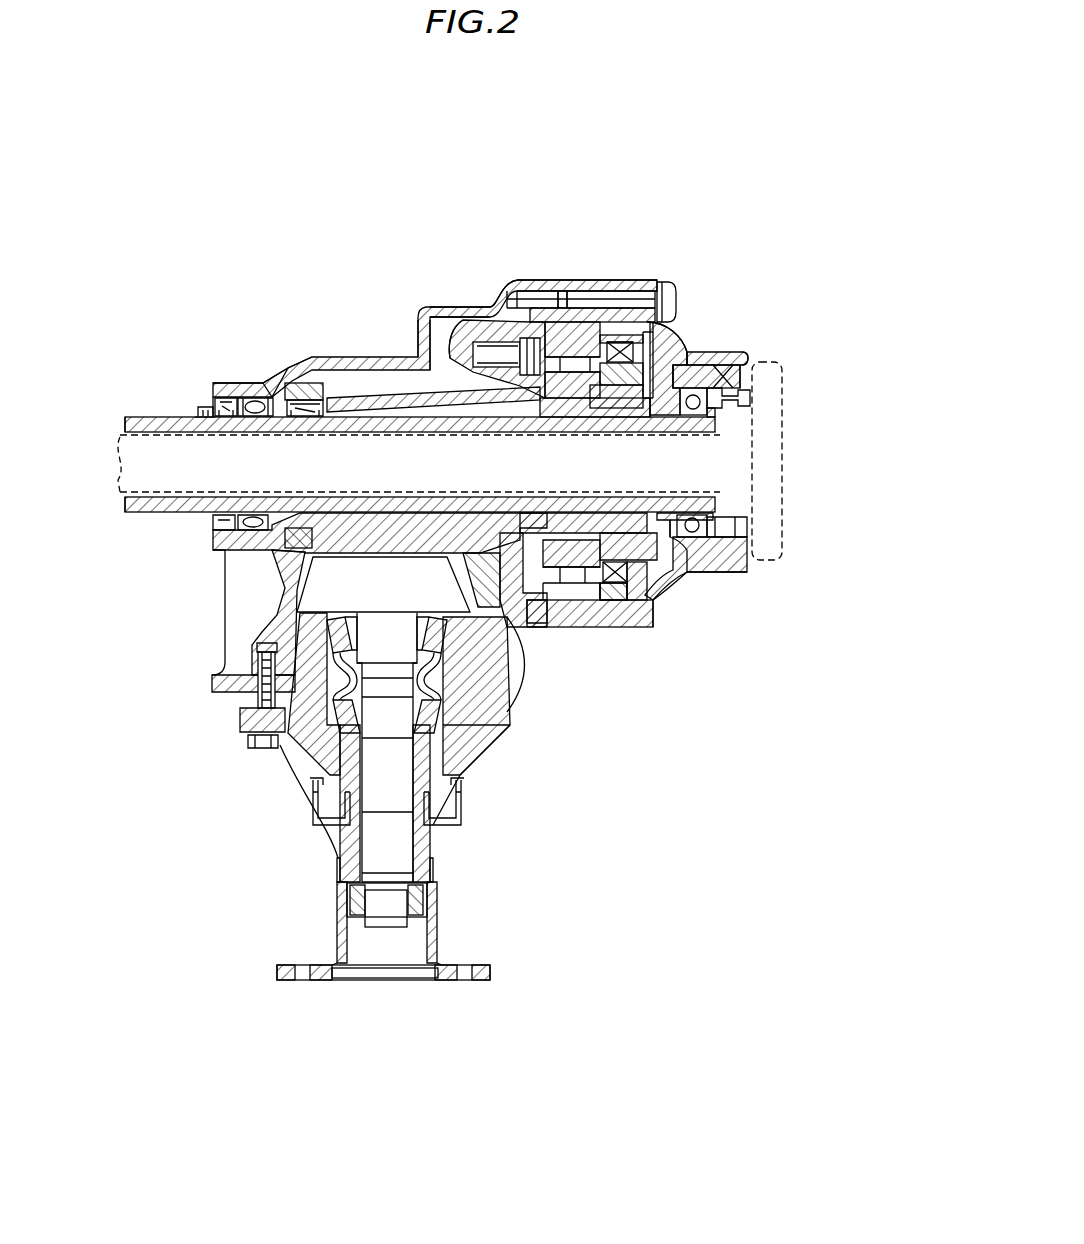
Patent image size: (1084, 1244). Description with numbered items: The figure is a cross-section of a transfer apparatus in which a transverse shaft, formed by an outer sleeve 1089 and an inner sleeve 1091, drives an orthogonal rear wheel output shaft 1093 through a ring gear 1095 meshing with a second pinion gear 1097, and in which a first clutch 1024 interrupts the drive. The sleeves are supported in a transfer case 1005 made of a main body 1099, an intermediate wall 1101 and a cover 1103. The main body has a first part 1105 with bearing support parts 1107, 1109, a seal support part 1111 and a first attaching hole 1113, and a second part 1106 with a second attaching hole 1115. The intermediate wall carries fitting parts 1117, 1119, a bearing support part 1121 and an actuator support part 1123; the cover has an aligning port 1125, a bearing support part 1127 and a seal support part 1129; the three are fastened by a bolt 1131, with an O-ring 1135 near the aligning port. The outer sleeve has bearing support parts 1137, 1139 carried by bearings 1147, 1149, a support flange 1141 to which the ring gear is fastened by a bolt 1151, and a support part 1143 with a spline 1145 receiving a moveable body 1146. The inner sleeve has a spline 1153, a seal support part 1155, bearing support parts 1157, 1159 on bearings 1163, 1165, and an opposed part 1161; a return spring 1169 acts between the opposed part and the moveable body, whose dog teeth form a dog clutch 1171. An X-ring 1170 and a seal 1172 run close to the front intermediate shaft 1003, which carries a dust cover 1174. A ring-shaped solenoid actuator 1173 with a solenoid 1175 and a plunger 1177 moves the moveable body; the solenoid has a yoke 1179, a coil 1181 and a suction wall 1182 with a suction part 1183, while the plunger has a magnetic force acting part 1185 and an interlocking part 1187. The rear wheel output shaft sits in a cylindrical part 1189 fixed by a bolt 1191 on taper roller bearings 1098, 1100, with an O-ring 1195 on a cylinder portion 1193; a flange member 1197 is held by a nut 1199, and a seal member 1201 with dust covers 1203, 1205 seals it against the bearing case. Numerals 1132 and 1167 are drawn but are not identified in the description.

The front intermediate shaft 1003 is at (748, 448).
The transfer case 1005 is at (424, 304).
The first clutch 1024 is at (697, 573).
The outer sleeve 1089 is at (365, 398).
The inner sleeve 1091 is at (435, 425).
The rear wheel output shaft 1093 is at (397, 852).
The ring gear 1095 is at (467, 322).
The second pinion gear 1097 is at (406, 596).
The taper roller bearing 1098 is at (257, 690).
The main body 1099 is at (318, 353).
The taper roller bearing 1100 is at (313, 767).
The intermediate wall 1101 is at (482, 260).
The cover 1103 is at (655, 634).
The first part 1105 is at (421, 306).
The second part 1106 is at (258, 620).
The bearing support part 1107 is at (300, 390).
The bearing support part 1109 is at (263, 383).
The seal support part 1111 is at (212, 400).
The first attaching hole 1113 is at (543, 280).
The second attaching hole 1115 is at (512, 700).
The fitting part 1117 is at (532, 628).
The fitting part 1119 is at (597, 617).
The bearing support part 1121 is at (565, 300).
The actuator support part 1123 is at (658, 282).
The aligning port 1125 is at (646, 625).
The bearing support part 1127 is at (722, 358).
The seal support part 1129 is at (745, 350).
The bolt 1131 is at (655, 318).
The spacer 1132 is at (542, 612).
The O-ring 1135 is at (632, 627).
The bearing support part 1137 is at (302, 410).
The bearing support part 1139 is at (547, 395).
The support flange 1141 is at (487, 310).
The support part 1143 is at (610, 423).
The spline 1145 is at (640, 413).
The moveable body 1146 is at (697, 342).
The bearing 1147 is at (262, 378).
The bearing 1149 is at (590, 300).
The bolt 1151 is at (497, 360).
The spline 1153 is at (143, 413).
The seal support part 1155 is at (213, 425).
The bearing support part 1157 is at (260, 425).
The bearing support part 1159 is at (687, 417).
The opposed part 1161 is at (713, 356).
The bearing 1163 is at (222, 388).
The bearing 1165 is at (733, 352).
The seal lip 1167 is at (198, 412).
The return spring 1169 is at (655, 425).
The X-ring 1170 is at (692, 500).
The dog clutch 1171 is at (703, 353).
The seal 1172 is at (747, 362).
The solenoid actuator 1173 is at (672, 330).
The dust cover 1174 is at (782, 385).
The solenoid 1175 is at (614, 330).
The plunger 1177 is at (690, 592).
The yoke 1179 is at (617, 627).
The coil 1181 is at (672, 612).
The suction wall 1182 is at (662, 560).
The suction part 1183 is at (593, 530).
The magnetic force acting part 1185 is at (587, 525).
The interlocking part 1187 is at (613, 527).
The cylindrical part 1189 is at (491, 757).
The bolt 1191 is at (258, 745).
The cylinder portion 1193 is at (300, 740).
The O-ring 1195 is at (244, 700).
The flange member 1197 is at (447, 982).
The nut 1199 is at (422, 908).
The seal member 1201 is at (333, 817).
The dust cover 1203 is at (440, 835).
The dust cover 1205 is at (465, 795).